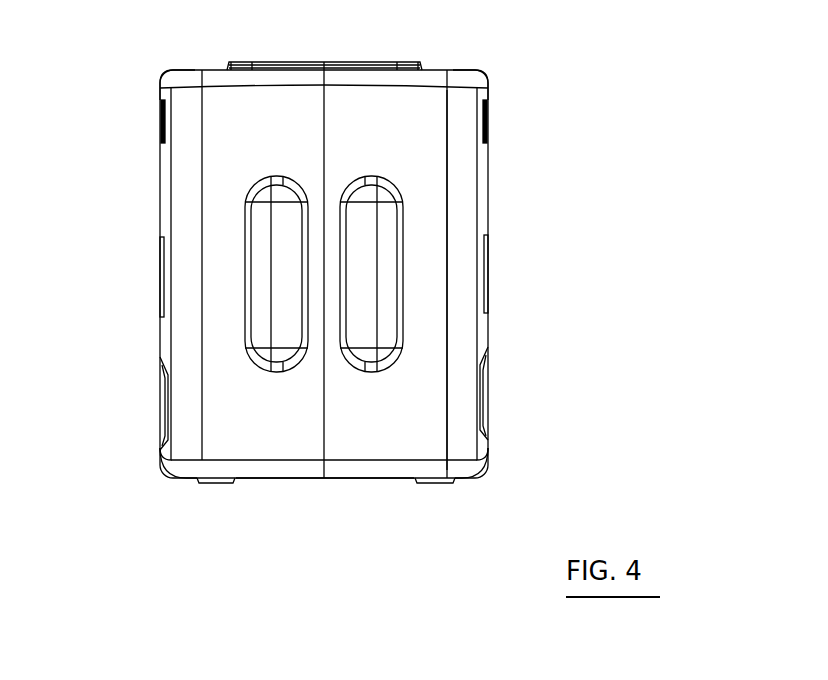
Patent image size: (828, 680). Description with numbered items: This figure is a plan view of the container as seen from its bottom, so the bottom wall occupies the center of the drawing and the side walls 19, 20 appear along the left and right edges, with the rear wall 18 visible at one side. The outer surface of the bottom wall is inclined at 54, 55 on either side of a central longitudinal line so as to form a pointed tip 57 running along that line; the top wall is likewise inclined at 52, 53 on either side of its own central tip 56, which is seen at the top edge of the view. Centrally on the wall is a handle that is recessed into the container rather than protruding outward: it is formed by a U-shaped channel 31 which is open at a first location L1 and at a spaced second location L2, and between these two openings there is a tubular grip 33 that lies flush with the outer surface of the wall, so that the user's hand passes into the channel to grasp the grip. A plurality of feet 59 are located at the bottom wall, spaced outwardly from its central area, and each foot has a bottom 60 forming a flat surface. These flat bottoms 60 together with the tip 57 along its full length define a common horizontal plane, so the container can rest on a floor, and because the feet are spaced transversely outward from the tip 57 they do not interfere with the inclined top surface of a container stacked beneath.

The rear wall 18 is at (458, 343).
The side wall 19 is at (488, 207).
The side wall 20 is at (160, 210).
The U-shaped channel 31 is at (385, 282).
The tubular grip 33 is at (316, 322).
The inclined portion of top wall 52 is at (455, 72).
The inclined portion of top wall 53 is at (190, 72).
The inclined portion of bottom wall 54 is at (383, 484).
The inclined portion of bottom wall 55 is at (259, 484).
The tip of top wall 56 is at (329, 66).
The tip of bottom wall 57 is at (323, 486).
The feet 59 is at (212, 478).
The bottoms of feet 60 is at (445, 484).
The first location L1 is at (376, 379).
The second location L2 is at (276, 379).